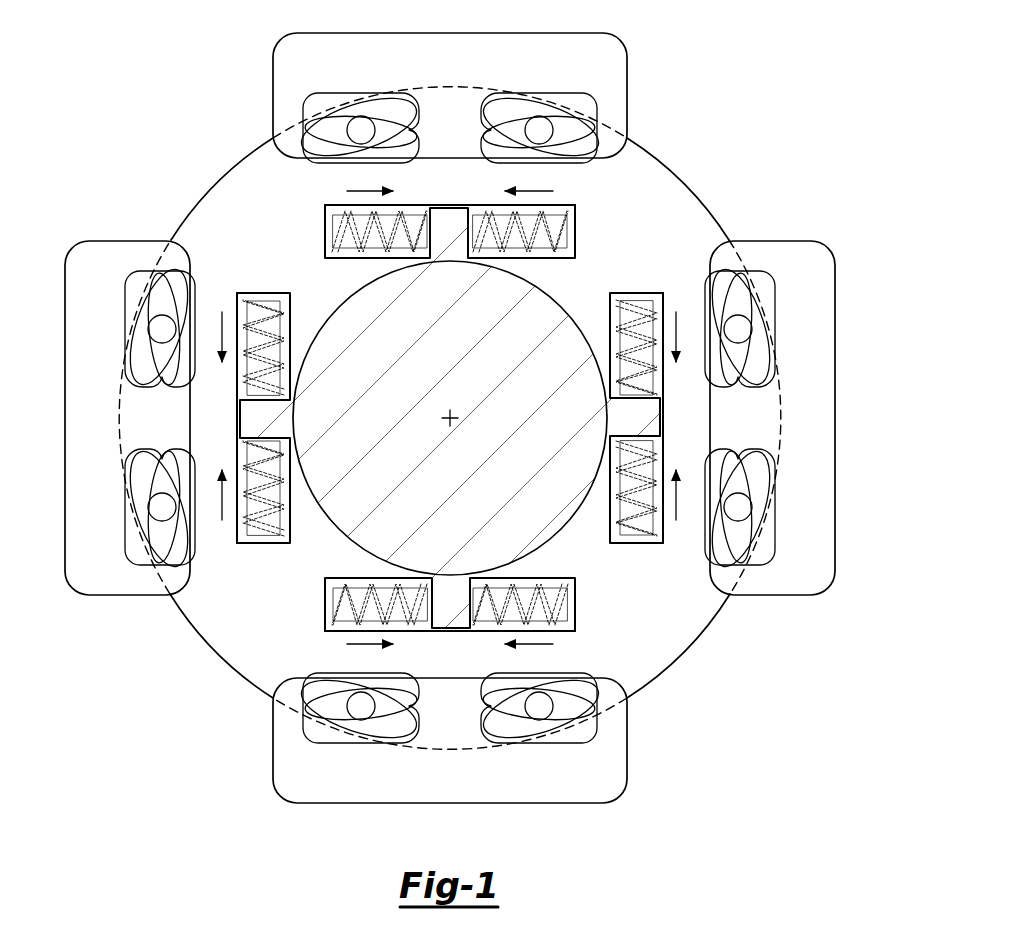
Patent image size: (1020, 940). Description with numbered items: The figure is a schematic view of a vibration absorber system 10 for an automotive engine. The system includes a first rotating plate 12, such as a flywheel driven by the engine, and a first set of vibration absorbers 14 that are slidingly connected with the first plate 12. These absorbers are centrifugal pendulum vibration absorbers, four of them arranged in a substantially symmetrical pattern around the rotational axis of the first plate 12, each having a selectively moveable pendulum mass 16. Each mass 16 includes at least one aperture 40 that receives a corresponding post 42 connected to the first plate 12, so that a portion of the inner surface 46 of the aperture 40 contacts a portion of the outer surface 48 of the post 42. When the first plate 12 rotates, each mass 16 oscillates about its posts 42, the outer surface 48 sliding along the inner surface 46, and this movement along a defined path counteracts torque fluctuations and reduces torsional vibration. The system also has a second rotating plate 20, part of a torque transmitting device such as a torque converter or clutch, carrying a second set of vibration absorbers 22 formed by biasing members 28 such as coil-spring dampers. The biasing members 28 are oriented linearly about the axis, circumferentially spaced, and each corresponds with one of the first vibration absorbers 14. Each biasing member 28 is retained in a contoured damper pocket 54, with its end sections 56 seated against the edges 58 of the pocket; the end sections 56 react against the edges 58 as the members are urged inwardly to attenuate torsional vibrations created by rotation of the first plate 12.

The vibration absorber system 10 is at (188, 651).
The first rotating plate 12 is at (672, 171).
The first set of vibration absorbers 14 is at (452, 427).
The pendulum mass 16 is at (612, 79).
The second rotating plate 20 is at (452, 415).
The second set of vibration absorbers 22 is at (454, 418).
The biasing member 28 is at (343, 250).
The aperture 40 is at (450, 420).
The post 42 is at (363, 123).
The inner surface 46 is at (323, 101).
The outer surface 48 is at (378, 135).
The damper pocket 54 is at (415, 205).
The end section 56 is at (328, 241).
The edge 58 is at (325, 207).